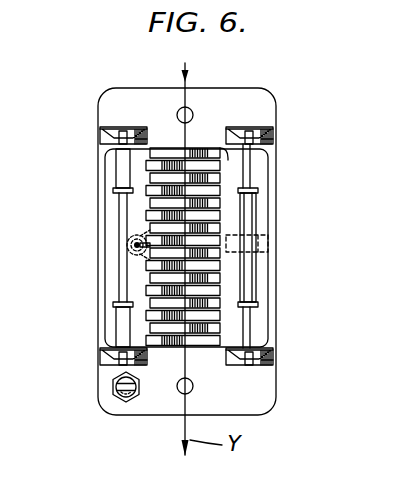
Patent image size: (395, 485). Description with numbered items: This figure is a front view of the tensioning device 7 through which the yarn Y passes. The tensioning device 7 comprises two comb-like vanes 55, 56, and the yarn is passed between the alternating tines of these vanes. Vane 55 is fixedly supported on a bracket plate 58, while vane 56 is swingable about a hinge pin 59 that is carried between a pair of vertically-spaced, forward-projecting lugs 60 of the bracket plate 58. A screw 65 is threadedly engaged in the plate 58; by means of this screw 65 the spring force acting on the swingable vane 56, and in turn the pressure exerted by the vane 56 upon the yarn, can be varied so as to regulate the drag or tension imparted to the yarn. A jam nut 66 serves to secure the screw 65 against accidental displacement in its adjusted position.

The tensioning device 7 is at (280, 117).
The comb-like vane 55 is at (263, 212).
The comb-like vane 56 is at (108, 218).
The bracket plate 58 is at (272, 385).
The hinge pin 59 is at (115, 285).
The lugs 60 is at (104, 137).
The screw 65 is at (118, 402).
The jam nut 66 is at (110, 392).